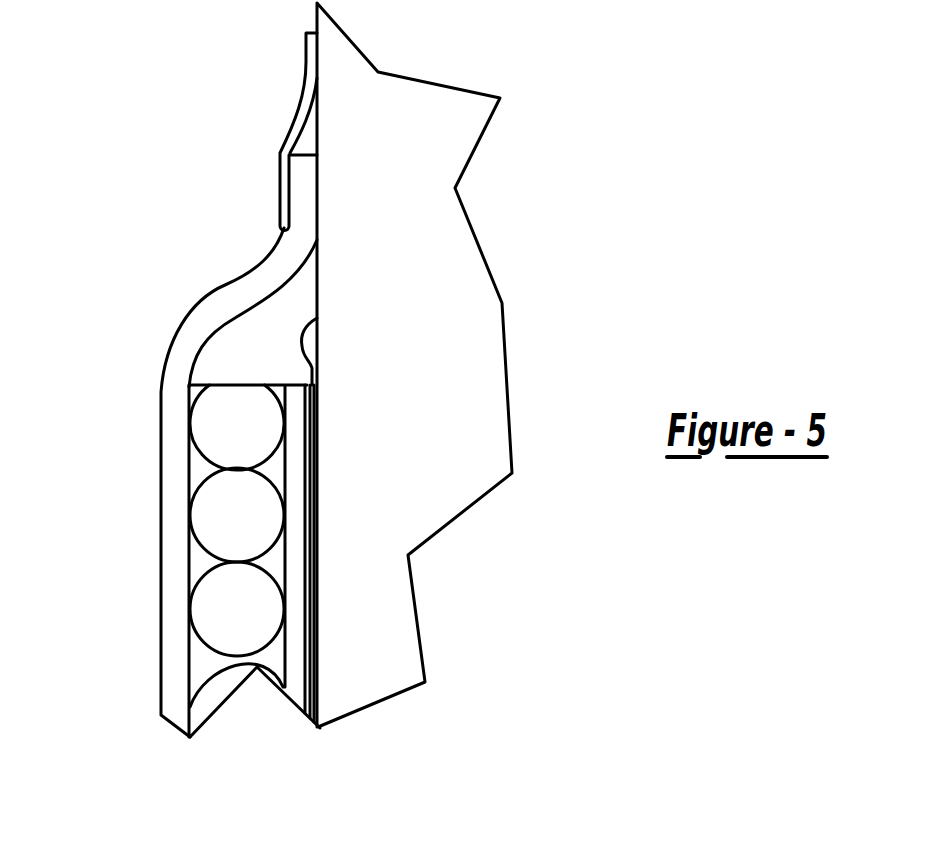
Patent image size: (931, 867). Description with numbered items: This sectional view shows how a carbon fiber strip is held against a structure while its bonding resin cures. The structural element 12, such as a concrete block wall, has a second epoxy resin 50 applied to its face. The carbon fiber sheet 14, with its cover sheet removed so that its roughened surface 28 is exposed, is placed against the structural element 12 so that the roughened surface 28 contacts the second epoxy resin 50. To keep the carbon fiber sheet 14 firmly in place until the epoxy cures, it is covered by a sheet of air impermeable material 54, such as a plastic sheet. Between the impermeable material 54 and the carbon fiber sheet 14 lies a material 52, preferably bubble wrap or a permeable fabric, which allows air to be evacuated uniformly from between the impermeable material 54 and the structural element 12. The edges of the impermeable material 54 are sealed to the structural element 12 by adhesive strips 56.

The structural element 12 is at (397, 112).
The carbon fiber sheet 14 is at (299, 655).
The roughened surface 28 is at (315, 608).
The second epoxy resin 50 is at (317, 318).
The material allowing uniform evacuation of air 52 is at (235, 417).
The sheet of air impermeable material 54 is at (273, 283).
The adhesive strips 56 is at (293, 128).